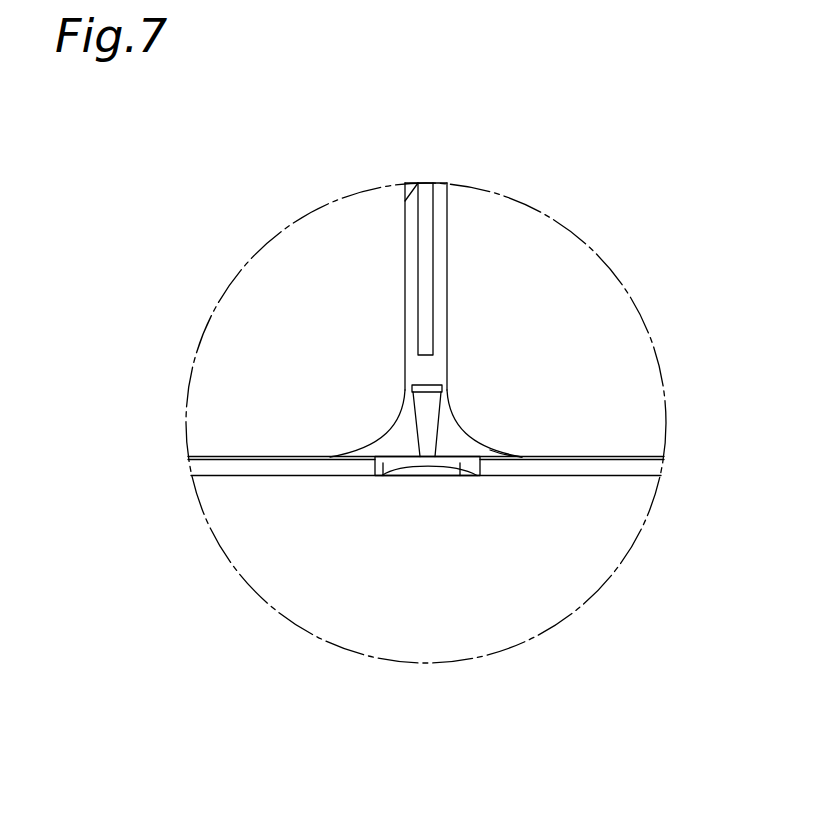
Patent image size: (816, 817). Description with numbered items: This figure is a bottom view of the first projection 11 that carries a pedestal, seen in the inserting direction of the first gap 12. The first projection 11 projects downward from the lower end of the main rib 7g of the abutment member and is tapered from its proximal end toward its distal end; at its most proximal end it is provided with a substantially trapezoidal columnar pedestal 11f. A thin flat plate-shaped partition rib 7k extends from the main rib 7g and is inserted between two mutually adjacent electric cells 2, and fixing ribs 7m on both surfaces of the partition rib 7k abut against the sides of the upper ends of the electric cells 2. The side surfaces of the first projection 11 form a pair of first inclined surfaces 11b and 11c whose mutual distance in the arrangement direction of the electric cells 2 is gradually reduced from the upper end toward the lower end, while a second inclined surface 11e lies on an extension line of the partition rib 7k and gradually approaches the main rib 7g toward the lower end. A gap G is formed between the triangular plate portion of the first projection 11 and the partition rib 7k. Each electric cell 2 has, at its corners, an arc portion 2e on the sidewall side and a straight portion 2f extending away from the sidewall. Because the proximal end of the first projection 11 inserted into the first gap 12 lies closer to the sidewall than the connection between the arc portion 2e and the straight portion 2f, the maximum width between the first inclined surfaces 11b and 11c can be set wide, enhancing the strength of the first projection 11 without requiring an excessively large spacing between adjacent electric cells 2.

The electric cell 2 is at (293, 242).
The arc portion 2e is at (392, 441).
The straight portion 2f is at (407, 345).
The main rib 7g is at (223, 468).
The partition rib 7k is at (427, 206).
The fixing rib 7m is at (412, 238).
The first projection 11 is at (397, 484).
The first inclined surface 11b is at (383, 465).
The first inclined surface 11c is at (460, 463).
The second inclined surface 11e is at (427, 426).
The pedestal 11f is at (453, 447).
The first gap 12 is at (372, 452).
The gap G is at (447, 371).